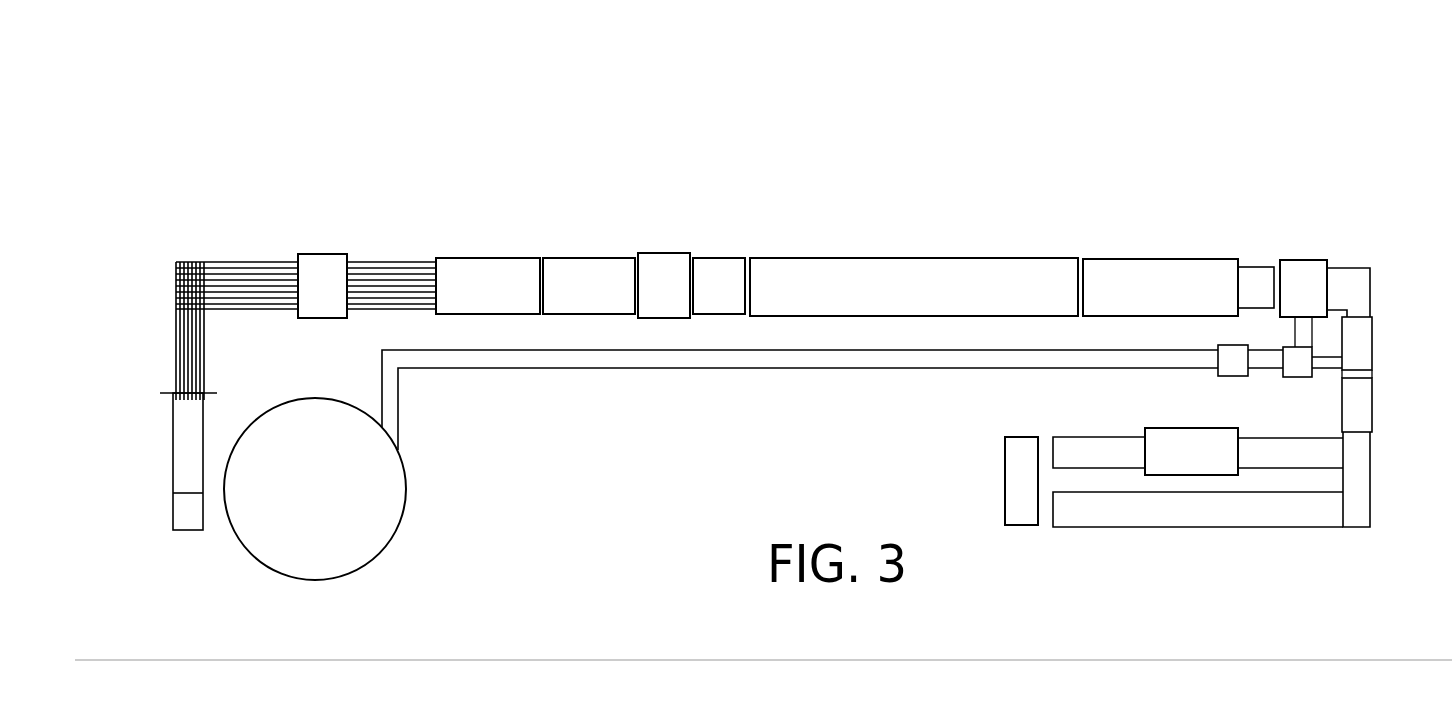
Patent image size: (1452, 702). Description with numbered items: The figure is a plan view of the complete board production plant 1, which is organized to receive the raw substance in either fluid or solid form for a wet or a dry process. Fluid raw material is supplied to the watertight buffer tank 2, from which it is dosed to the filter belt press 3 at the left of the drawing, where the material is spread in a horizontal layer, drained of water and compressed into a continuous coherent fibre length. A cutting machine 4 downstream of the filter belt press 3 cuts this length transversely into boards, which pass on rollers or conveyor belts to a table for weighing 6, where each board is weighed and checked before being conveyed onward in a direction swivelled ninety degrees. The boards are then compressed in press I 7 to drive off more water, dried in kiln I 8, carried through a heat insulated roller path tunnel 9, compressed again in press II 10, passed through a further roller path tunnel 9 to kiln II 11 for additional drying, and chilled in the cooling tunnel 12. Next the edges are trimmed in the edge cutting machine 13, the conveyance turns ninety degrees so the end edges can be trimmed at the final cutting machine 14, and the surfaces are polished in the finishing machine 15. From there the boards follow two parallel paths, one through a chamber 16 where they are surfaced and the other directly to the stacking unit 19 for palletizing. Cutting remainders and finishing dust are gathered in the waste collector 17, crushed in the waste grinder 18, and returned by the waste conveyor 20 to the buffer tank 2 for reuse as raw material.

The plant 1 is at (712, 112).
The buffer tank 2 is at (400, 497).
The filter belt press 3 is at (180, 445).
The cutting machine 4 is at (170, 393).
The table for weighing 6 is at (176, 278).
The press I 7 is at (318, 268).
The kiln I 8 is at (490, 272).
The roller path tunnel 9 is at (585, 272).
The press II 10 is at (665, 260).
The kiln II 11 is at (948, 272).
The cooling tunnel 12 is at (1173, 272).
The edge cutting machine 13 is at (1302, 272).
The final cutting machine 14 is at (1360, 340).
The finishing machine 15 is at (1360, 402).
The chamber 16 is at (1170, 440).
The waste collector 17 is at (1295, 355).
The waste grinder 18 is at (1225, 355).
The stacking unit 19 is at (1010, 480).
The waste conveyor 20 is at (567, 360).